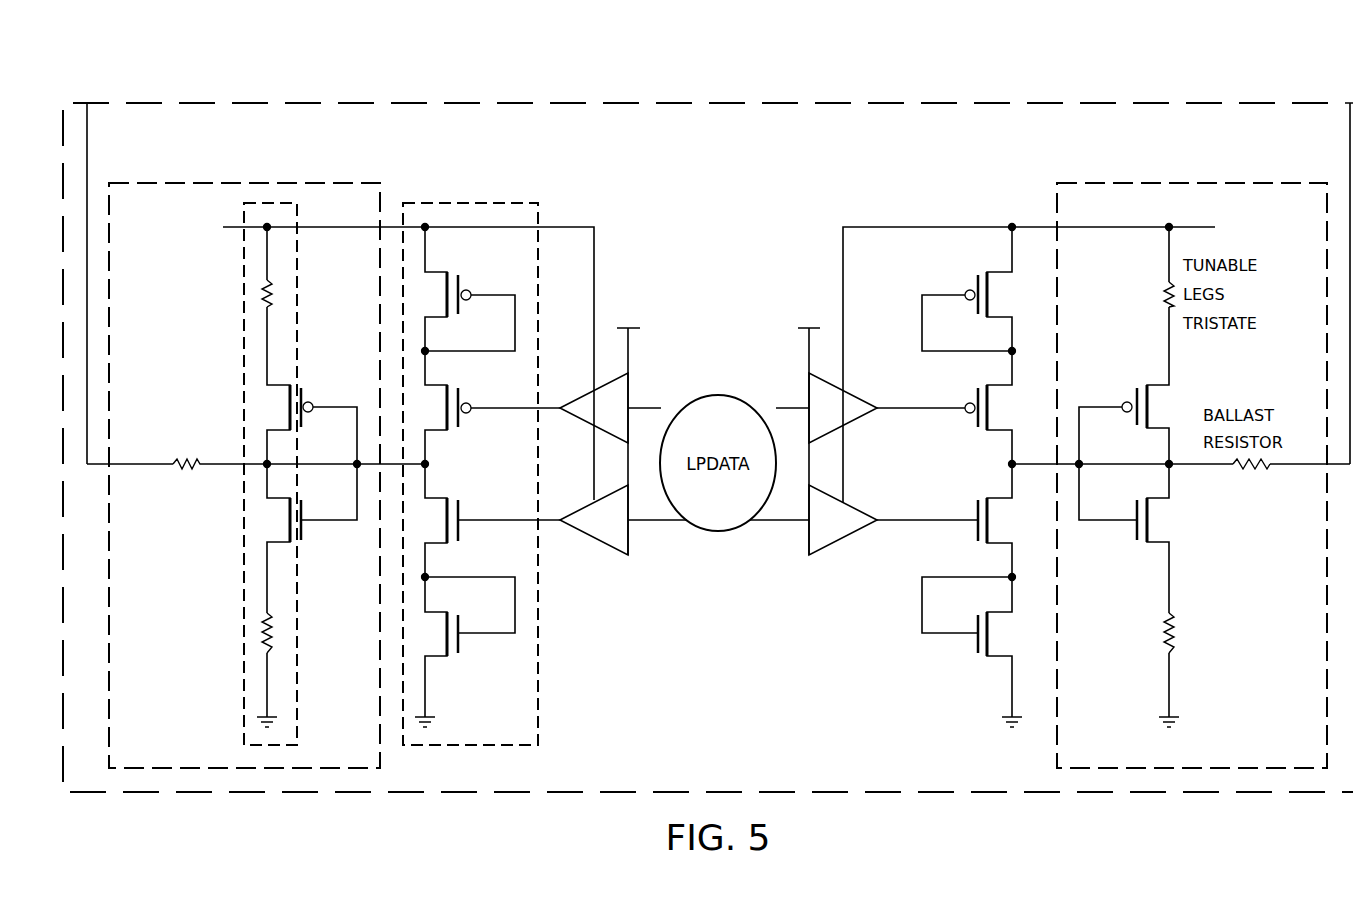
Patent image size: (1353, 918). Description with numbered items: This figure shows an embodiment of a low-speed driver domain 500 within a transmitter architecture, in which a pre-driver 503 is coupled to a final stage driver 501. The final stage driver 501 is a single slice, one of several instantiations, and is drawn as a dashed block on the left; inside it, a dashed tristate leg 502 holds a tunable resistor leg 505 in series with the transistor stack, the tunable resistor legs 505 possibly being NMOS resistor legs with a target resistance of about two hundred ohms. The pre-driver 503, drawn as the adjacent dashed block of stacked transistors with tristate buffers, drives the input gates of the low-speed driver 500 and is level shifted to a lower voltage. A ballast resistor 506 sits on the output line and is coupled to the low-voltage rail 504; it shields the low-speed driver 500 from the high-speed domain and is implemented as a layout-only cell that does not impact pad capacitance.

The low-speed driver domain 500 is at (188, 80).
The final stage driver 501 is at (244, 180).
The tristate leg 502 is at (244, 595).
The pre-driver 503 is at (538, 595).
The low-voltage rail 504 is at (87, 160).
The tunable resistor legs 505 is at (276, 293).
The ballast resistor 506 is at (190, 470).